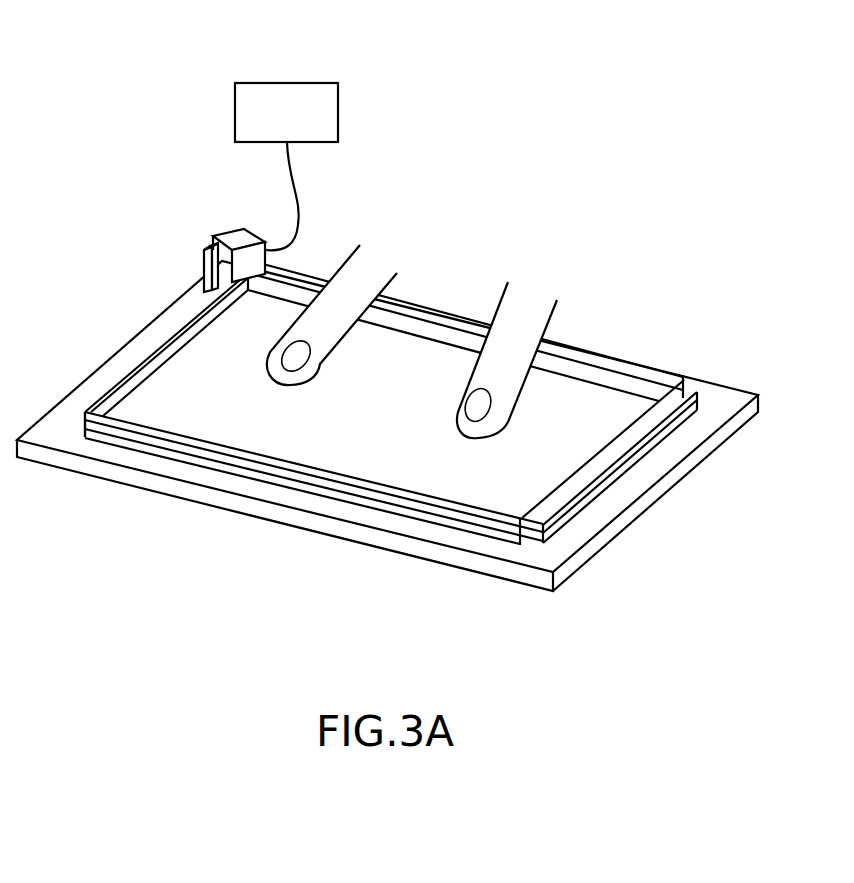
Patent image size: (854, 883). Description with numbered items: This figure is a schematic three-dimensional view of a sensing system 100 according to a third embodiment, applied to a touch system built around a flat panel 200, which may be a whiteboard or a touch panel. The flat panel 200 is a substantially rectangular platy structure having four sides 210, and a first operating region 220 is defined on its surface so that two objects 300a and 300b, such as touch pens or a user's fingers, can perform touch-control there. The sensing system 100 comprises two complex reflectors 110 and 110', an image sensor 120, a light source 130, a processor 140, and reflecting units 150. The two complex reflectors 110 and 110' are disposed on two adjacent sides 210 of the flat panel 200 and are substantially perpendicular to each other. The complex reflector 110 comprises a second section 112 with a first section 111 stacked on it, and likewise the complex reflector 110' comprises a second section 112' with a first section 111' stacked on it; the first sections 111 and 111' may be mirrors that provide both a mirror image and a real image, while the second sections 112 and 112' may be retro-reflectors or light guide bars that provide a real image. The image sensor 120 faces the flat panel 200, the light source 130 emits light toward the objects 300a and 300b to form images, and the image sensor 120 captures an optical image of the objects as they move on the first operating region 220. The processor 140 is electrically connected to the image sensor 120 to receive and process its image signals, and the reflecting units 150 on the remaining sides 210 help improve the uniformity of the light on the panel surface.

The sensing system 100 is at (150, 48).
The complex reflector 110 is at (646, 497).
The first section 111 is at (626, 459).
The second section 112 is at (620, 502).
The complex reflector 110' is at (302, 517).
The first section 111' is at (314, 492).
The second section 112' is at (314, 510).
The image sensor 120 is at (240, 238).
The light source 130 is at (203, 260).
The processor 140 is at (308, 122).
The reflecting unit 150 is at (132, 373).
The flat panel 200 is at (725, 400).
The side 210 is at (58, 392).
The first operating region 220 is at (567, 408).
The object 300a is at (508, 308).
The object 300b is at (352, 270).